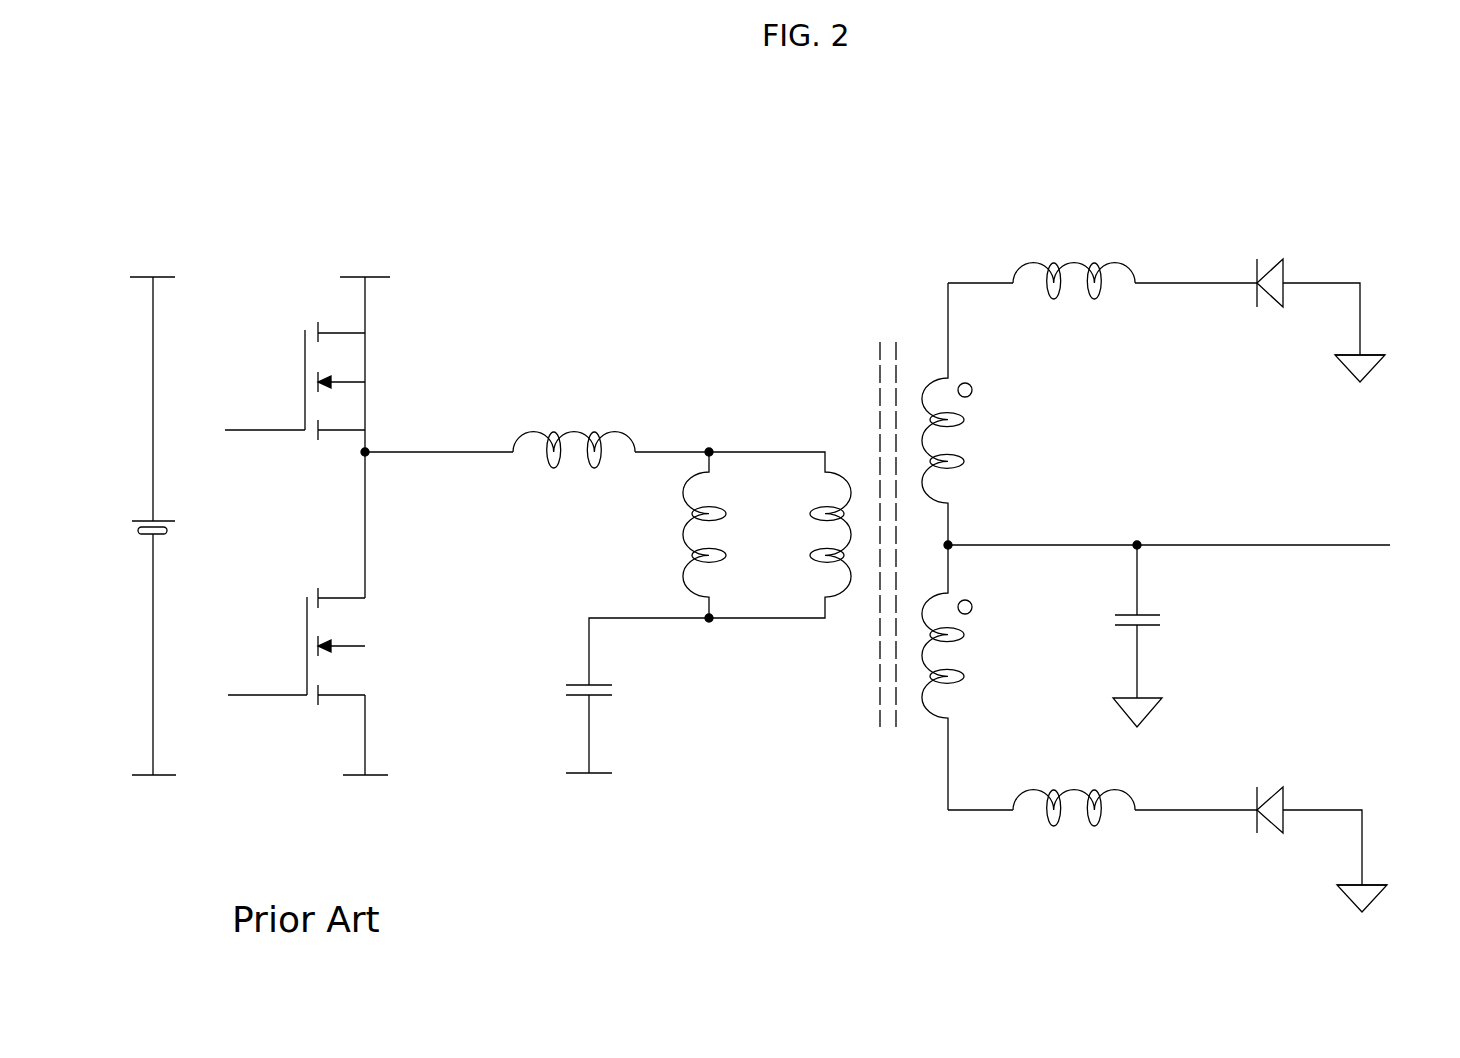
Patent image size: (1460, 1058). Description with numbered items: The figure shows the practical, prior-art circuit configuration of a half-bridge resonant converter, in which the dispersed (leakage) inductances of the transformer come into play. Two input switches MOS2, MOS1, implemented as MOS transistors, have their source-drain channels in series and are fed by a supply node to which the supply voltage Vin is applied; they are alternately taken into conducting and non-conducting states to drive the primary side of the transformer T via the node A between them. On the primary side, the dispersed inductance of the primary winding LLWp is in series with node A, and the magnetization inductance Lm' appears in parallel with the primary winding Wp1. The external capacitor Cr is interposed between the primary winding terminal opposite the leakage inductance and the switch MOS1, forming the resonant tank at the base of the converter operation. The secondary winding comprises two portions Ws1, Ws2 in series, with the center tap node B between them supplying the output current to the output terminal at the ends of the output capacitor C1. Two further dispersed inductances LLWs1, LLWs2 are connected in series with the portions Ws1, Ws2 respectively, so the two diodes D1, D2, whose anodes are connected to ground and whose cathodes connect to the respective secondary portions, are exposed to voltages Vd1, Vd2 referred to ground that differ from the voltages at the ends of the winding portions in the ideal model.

The supply voltage Vin is at (124, 540).
The input switch MOS2 is at (352, 378).
The input switch MOS1 is at (352, 644).
The node A is at (361, 457).
The dispersed inductance of the primary winding LLWp is at (574, 428).
The transformer T is at (788, 400).
The magnetization inductance Lm' is at (667, 535).
The primary winding Wp1 is at (815, 556).
The external capacitor Cr is at (600, 698).
The first portion of the secondary winding Ws1 is at (963, 452).
The second portion of the secondary winding Ws2 is at (963, 674).
The dispersed inductance LLWs1 is at (1072, 256).
The dispersed inductance LLWs2 is at (1060, 832).
The voltage Vd1 is at (1196, 269).
The voltage Vd2 is at (1196, 796).
The diode D1 is at (1282, 268).
The diode D2 is at (1276, 826).
The center tap node B is at (955, 538).
The output capacitor C1 is at (1152, 612).